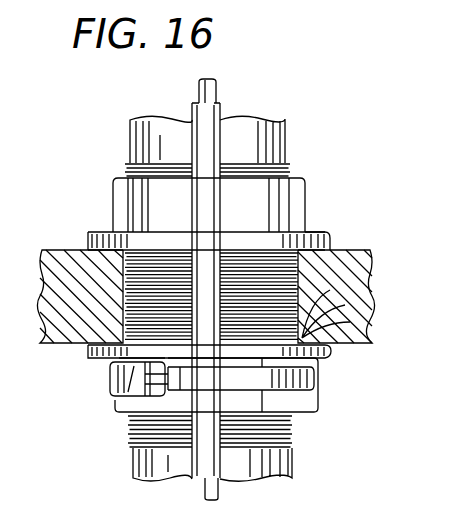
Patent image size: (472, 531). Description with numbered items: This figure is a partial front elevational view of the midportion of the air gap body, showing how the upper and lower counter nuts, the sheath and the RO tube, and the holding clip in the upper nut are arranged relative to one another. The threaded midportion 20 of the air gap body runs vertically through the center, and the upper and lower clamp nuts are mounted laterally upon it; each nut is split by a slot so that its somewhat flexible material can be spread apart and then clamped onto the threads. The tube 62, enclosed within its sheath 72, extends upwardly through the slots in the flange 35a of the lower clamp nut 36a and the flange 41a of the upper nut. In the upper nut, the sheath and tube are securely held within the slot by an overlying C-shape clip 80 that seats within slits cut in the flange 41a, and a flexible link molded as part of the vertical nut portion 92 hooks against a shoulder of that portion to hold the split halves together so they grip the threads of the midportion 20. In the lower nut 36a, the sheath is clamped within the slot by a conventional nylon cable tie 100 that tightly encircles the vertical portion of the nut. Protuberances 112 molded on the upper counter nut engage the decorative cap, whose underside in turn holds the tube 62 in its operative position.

The threaded midportion 20 is at (118, 286).
The flange 35a is at (331, 351).
The lower clamp nut 36a is at (300, 396).
The flange 41a is at (330, 241).
The tube 62 is at (205, 488).
The lower sleeve 72 is at (228, 462).
The C-shape clip 80 is at (225, 190).
The vertical nut portion 92 is at (297, 186).
The nylon cable tie 100 is at (110, 378).
The protuberances 112 is at (136, 195).